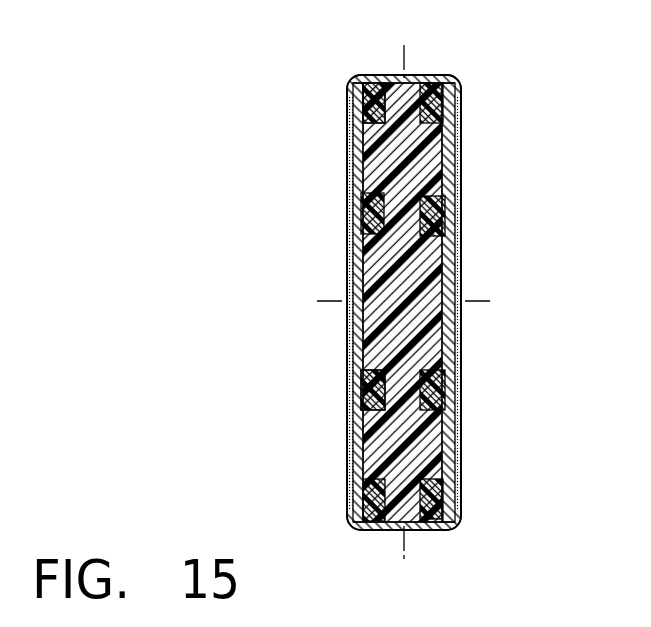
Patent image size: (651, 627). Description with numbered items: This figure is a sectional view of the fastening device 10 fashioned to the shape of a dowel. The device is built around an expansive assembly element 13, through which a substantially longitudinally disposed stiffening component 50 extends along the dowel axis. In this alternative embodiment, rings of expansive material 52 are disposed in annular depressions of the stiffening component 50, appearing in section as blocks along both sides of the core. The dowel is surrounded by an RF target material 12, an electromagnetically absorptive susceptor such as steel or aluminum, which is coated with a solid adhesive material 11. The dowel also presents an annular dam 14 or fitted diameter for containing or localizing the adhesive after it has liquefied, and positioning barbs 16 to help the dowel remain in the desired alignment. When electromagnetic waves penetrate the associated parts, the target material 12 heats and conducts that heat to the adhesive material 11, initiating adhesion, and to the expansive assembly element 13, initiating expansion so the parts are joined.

The fastening device 10 is at (436, 76).
The solid adhesive material 11 is at (457, 243).
The target material 12 is at (453, 87).
The expansive assembly element 13 is at (420, 260).
The annular dam 14 is at (458, 350).
The positioning barbs 16 is at (458, 373).
The stiffening component 50 is at (367, 286).
The rings of expansive material 52 is at (362, 87).